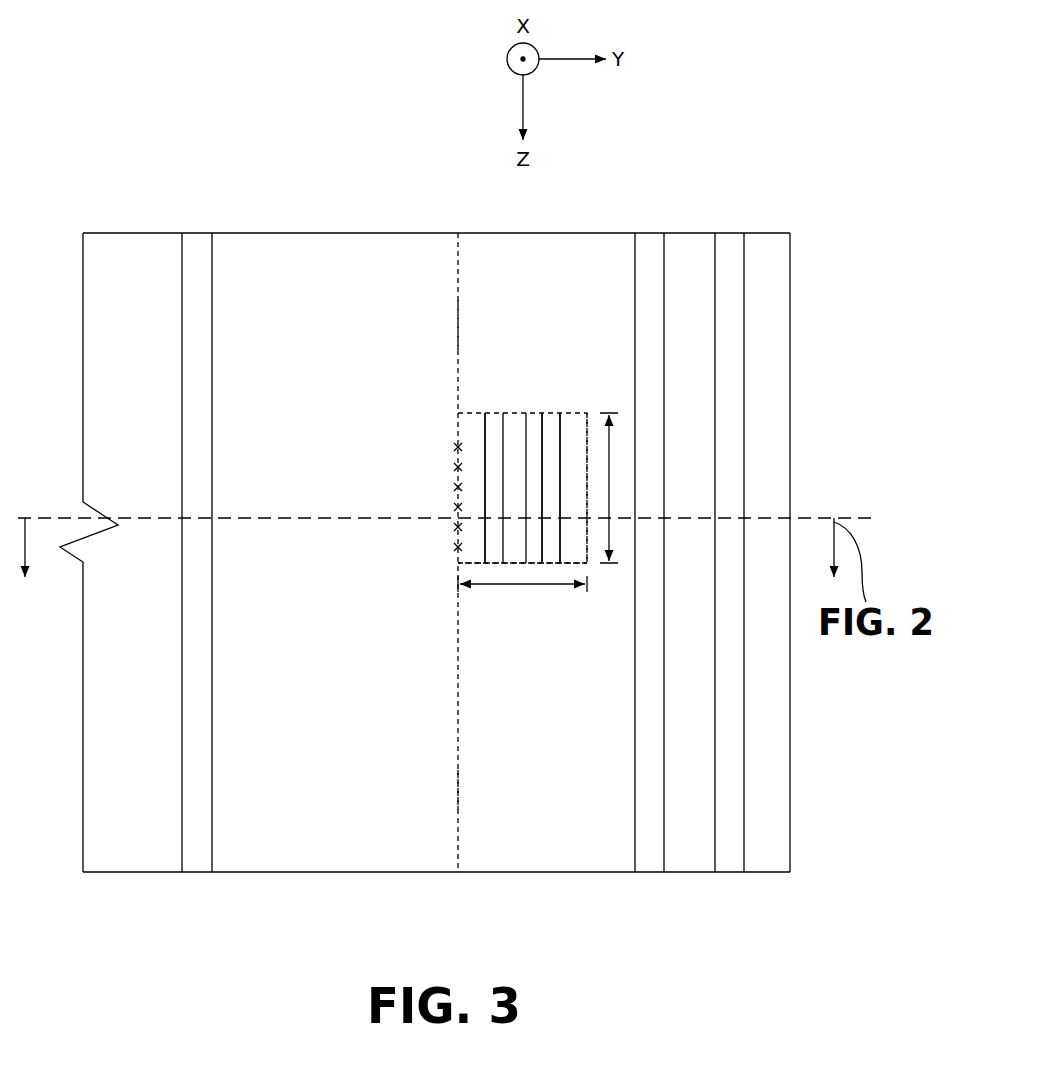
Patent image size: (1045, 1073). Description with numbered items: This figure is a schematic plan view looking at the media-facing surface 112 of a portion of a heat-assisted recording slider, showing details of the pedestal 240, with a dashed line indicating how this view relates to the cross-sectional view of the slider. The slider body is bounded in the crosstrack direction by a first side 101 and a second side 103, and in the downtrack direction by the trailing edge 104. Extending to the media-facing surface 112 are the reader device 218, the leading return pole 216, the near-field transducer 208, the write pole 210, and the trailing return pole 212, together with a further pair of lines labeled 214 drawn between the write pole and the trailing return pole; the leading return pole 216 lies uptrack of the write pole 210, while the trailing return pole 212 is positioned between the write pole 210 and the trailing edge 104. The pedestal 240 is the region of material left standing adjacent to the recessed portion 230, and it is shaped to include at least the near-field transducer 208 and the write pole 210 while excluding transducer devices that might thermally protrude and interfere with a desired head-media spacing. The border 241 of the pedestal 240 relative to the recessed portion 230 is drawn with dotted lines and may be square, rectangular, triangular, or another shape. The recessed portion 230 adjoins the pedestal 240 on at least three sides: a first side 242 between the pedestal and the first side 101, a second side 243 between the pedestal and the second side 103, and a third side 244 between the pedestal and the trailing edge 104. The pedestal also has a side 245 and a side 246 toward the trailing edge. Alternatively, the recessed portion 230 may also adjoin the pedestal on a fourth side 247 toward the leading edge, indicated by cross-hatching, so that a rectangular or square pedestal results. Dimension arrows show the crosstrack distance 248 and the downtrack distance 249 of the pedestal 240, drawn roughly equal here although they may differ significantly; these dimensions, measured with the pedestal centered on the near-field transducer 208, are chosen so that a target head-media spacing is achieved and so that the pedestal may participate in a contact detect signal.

The first side of the recording head 101 is at (268, 233).
The second side of the recording head 103 is at (592, 873).
The trailing edge 104 is at (791, 258).
The media-facing surface 112 is at (148, 432).
The near-field transducer 208 is at (533, 413).
The write pole 210 is at (553, 413).
The trailing return pole 212 is at (732, 243).
The conductive via 214 is at (650, 243).
The leading return pole 216 is at (497, 411).
The reader device 218 is at (197, 243).
The recessed portion 230 is at (588, 258).
The pedestal 240 is at (579, 409).
The border of the pedestal 241 is at (461, 733).
The first side of the recessed portion 242 is at (519, 407).
The second side of the recessed portion 243 is at (517, 566).
The third side of the recessed portion 244 is at (590, 489).
The side of the pedestal 245 is at (460, 323).
The side of the pedestal 246 is at (460, 790).
The fourth side 247 is at (457, 446).
The pedestal distance in the crosstrack direction 248 is at (613, 447).
The pedestal distance in the downtrack direction 249 is at (555, 588).